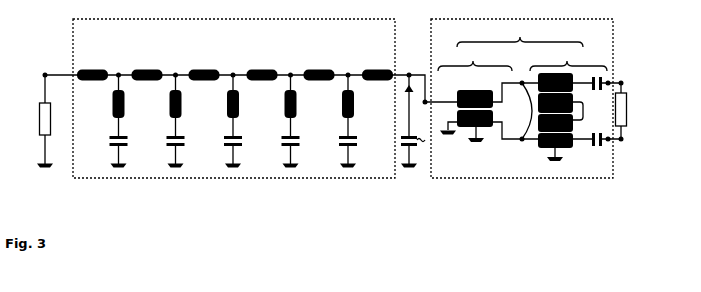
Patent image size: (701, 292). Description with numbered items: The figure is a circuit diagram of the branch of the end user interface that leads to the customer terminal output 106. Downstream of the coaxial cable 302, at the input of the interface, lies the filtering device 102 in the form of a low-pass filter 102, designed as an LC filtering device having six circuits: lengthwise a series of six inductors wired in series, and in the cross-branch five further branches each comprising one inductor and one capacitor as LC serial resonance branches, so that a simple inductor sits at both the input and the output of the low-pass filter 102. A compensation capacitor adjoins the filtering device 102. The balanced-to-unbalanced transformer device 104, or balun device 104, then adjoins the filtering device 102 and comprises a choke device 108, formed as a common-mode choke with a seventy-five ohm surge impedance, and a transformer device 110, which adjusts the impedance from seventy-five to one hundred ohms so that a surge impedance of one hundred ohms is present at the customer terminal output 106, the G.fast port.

The filtering device 102 is at (251, 98).
The balanced-to-unbalanced transformer device 104 is at (526, 98).
The customer terminal output 106 is at (641, 111).
The choke device 108 is at (488, 96).
The transformer device 110 is at (575, 105).
The coaxial cable 302 is at (30, 120).